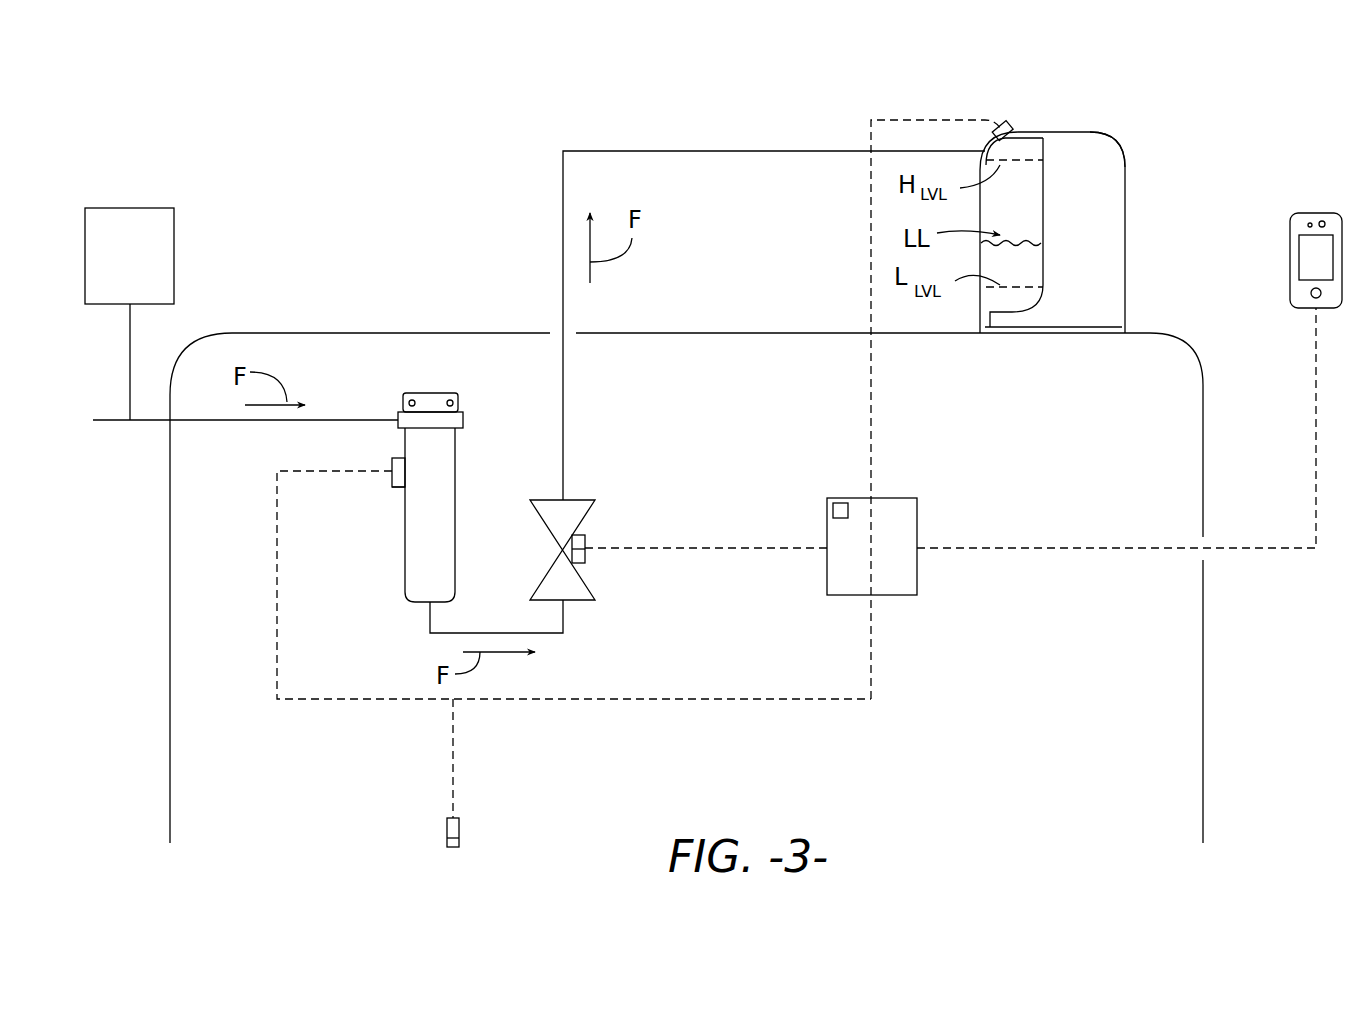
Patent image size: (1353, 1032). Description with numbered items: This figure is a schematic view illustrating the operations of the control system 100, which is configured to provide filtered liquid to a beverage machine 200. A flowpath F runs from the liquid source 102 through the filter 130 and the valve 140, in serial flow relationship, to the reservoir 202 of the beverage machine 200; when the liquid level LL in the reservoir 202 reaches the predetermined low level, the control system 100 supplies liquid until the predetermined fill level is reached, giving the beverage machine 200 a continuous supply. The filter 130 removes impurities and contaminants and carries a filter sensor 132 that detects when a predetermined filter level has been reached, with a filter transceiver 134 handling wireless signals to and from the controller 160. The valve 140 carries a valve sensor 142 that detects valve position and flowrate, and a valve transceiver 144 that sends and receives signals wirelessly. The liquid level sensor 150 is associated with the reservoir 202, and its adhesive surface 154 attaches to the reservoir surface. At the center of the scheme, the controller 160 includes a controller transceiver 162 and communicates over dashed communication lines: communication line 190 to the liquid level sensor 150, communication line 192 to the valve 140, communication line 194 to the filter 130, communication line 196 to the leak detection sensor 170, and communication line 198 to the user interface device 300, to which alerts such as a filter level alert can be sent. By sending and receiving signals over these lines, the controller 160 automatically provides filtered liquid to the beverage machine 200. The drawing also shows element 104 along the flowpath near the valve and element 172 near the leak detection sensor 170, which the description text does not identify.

The control system 100 is at (340, 240).
The liquid source 102 is at (111, 268).
The fluid conduit 104 is at (563, 240).
The filter 130 is at (480, 433).
The filter sensor 132 is at (392, 465).
The filter transceiver 134 is at (392, 483).
The valve 140 is at (582, 480).
The valve sensor 142 is at (585, 543).
The valve transceiver 144 is at (585, 558).
The liquid level sensor 150 is at (1020, 125).
The adhesive surface 154 is at (990, 133).
The controller 160 is at (851, 563).
The controller transceiver 162 is at (843, 503).
The leak detection sensor 170 is at (470, 843).
The sensor element 172 is at (462, 830).
The communication line 190 is at (905, 118).
The communication line 192 is at (785, 548).
The communication line 194 is at (277, 593).
The communication line 196 is at (452, 780).
The communication line 198 is at (1316, 433).
The beverage machine 200 is at (1145, 177).
The reservoir 202 is at (993, 213).
The user interface device 300 is at (1280, 240).